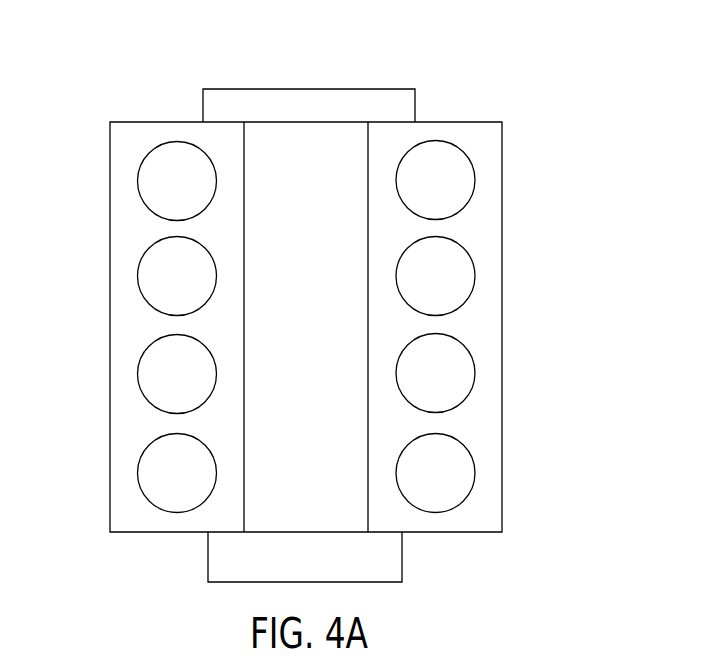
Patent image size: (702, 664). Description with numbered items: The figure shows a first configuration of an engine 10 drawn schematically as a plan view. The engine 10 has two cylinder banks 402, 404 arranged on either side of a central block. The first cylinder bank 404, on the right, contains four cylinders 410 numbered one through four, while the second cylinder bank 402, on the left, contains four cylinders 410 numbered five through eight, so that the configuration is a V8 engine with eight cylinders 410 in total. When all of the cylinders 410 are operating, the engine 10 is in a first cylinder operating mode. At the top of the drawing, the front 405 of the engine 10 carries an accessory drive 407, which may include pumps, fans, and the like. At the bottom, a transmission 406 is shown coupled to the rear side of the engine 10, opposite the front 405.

The engine 10 is at (308, 294).
The second cylinder bank 402 is at (160, 50).
The first cylinder bank 404 is at (460, 88).
The front 405 is at (309, 83).
The transmission 406 is at (305, 557).
The accessory drive 407 is at (307, 107).
The cylinders 410 is at (308, 327).